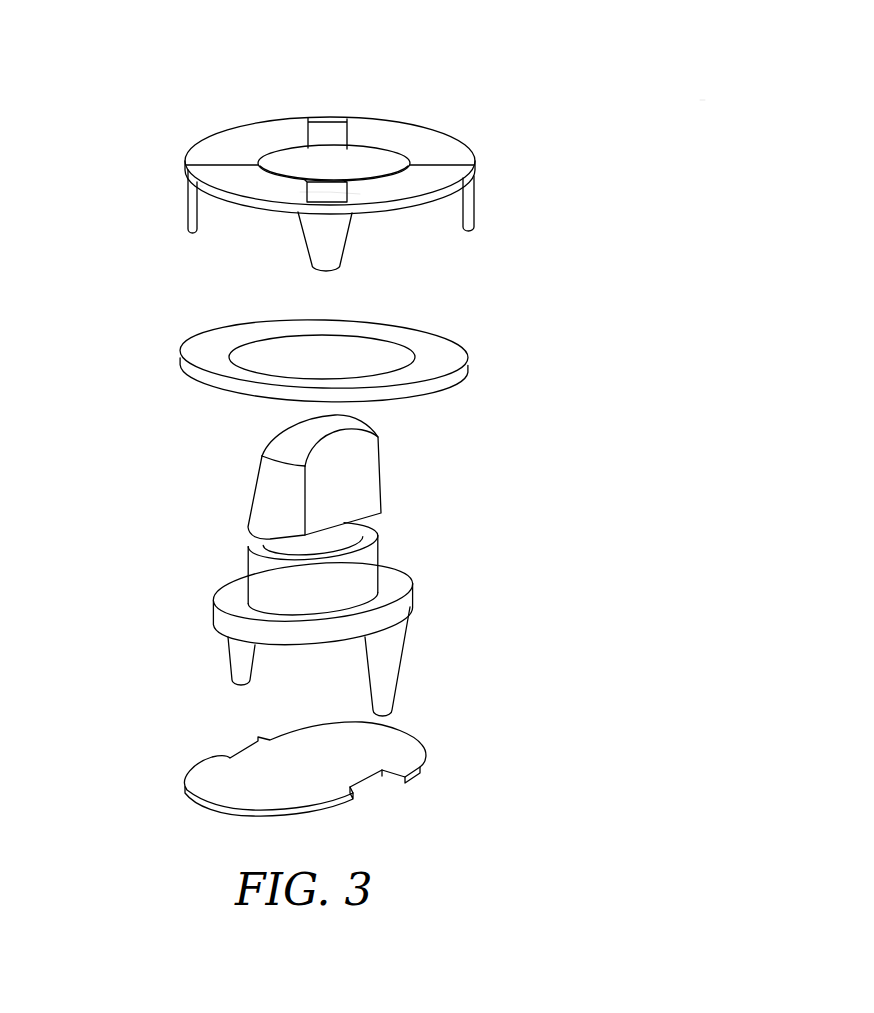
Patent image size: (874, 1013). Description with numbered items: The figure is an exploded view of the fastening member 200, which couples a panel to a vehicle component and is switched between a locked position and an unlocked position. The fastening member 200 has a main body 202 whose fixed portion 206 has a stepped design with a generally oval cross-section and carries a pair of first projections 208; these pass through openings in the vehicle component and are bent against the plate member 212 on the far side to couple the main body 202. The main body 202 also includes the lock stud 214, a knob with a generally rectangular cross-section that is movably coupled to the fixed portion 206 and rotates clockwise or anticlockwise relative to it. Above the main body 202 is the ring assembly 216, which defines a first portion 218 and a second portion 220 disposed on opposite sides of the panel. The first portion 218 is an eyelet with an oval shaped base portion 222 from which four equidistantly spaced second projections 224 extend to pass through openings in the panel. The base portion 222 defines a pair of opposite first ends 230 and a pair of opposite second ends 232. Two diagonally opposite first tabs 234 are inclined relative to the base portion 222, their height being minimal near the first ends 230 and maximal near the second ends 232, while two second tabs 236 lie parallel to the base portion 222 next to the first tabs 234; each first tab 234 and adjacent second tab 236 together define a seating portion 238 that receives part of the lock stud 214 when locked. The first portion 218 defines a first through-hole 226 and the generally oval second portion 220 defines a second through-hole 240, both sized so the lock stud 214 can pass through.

The fastening member 200 is at (712, 97).
The main body 202 is at (295, 477).
The fixed portion 206 is at (233, 603).
The first projections 208 is at (383, 690).
The plate member 212 is at (213, 777).
The lock stud 214 is at (362, 470).
The ring assembly 216 is at (457, 106).
The first portion 218 is at (180, 129).
The second portion 220 is at (205, 362).
The base portion 222 is at (203, 186).
The second projections 224 is at (320, 243).
The first through-hole 226 is at (389, 155).
The first ends 230 is at (171, 185).
The second ends 232 is at (329, 111).
The first tabs 234 is at (270, 134).
The second tabs 236 is at (342, 127).
The seating portion 238 is at (320, 129).
The second through-hole 240 is at (303, 354).